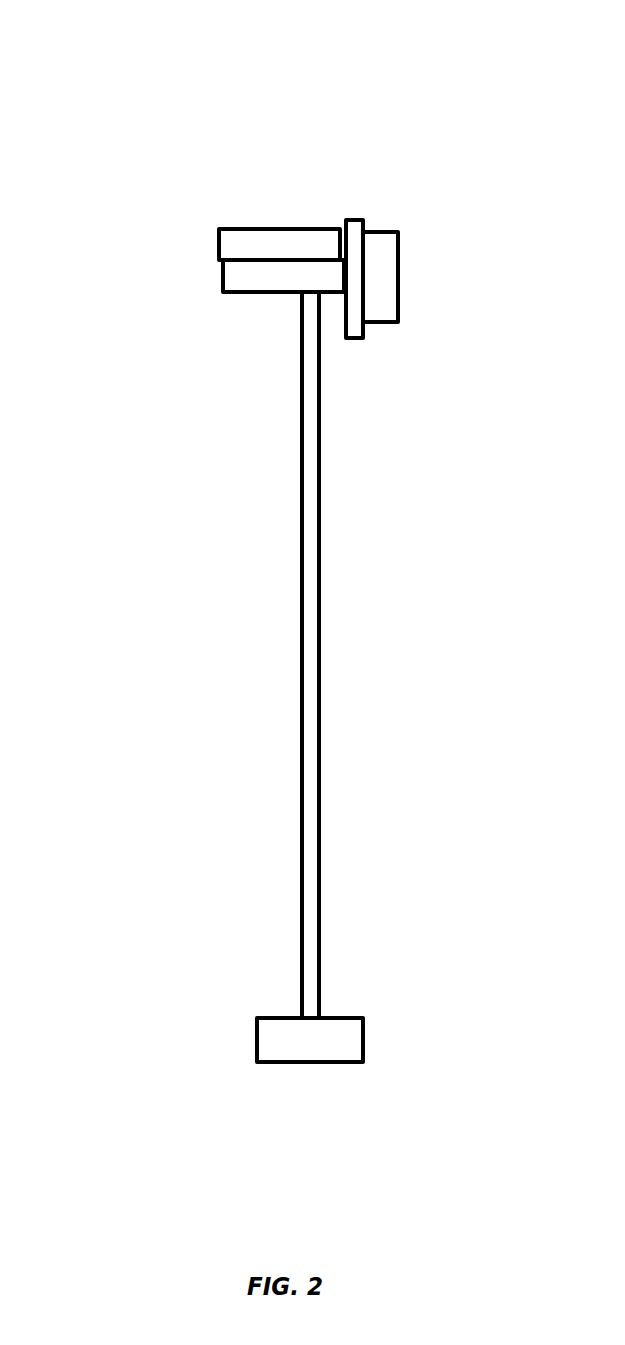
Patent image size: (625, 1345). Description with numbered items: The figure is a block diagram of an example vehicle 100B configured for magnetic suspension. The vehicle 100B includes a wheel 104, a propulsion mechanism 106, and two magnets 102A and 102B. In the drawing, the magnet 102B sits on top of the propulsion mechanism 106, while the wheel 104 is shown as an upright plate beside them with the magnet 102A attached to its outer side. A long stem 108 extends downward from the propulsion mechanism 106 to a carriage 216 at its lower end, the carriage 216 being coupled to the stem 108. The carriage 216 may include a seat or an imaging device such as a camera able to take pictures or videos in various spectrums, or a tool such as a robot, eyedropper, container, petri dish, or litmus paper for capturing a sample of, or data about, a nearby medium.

The vehicle 100B is at (122, 74).
The magnet 102A is at (392, 275).
The magnet 102B is at (300, 233).
The wheel 104 is at (353, 225).
The propulsion mechanism 106 is at (275, 275).
The stem 108 is at (313, 577).
The carriage 216 is at (287, 1048).